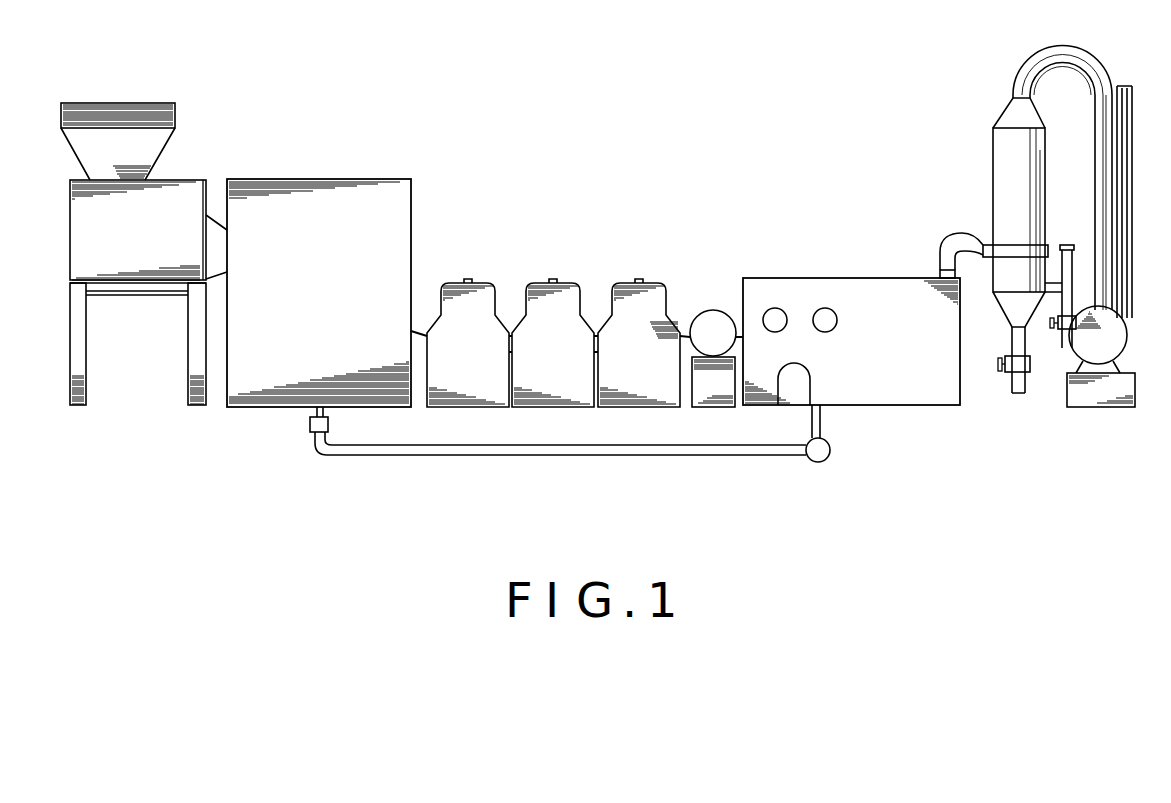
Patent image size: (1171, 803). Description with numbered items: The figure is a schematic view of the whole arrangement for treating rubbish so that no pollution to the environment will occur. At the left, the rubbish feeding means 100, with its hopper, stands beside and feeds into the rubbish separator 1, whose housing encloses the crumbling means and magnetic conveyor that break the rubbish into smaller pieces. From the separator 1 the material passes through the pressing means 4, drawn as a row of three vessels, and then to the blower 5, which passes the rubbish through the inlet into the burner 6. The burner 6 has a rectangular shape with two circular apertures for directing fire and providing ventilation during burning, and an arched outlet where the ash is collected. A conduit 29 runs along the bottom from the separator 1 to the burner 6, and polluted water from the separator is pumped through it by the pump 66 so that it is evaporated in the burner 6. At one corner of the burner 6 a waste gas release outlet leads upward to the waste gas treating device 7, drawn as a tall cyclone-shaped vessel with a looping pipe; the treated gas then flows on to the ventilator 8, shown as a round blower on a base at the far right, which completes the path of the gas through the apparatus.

The feeding means 100 is at (178, 160).
The rubbish separator 1 is at (305, 173).
The pressing means 4 is at (648, 248).
The blower 5 is at (716, 300).
The burner 6 is at (809, 260).
The waste gas treating device 7 is at (985, 209).
The ventilator 8 is at (1135, 342).
The conduit 29 is at (500, 456).
The pump 66 is at (818, 462).